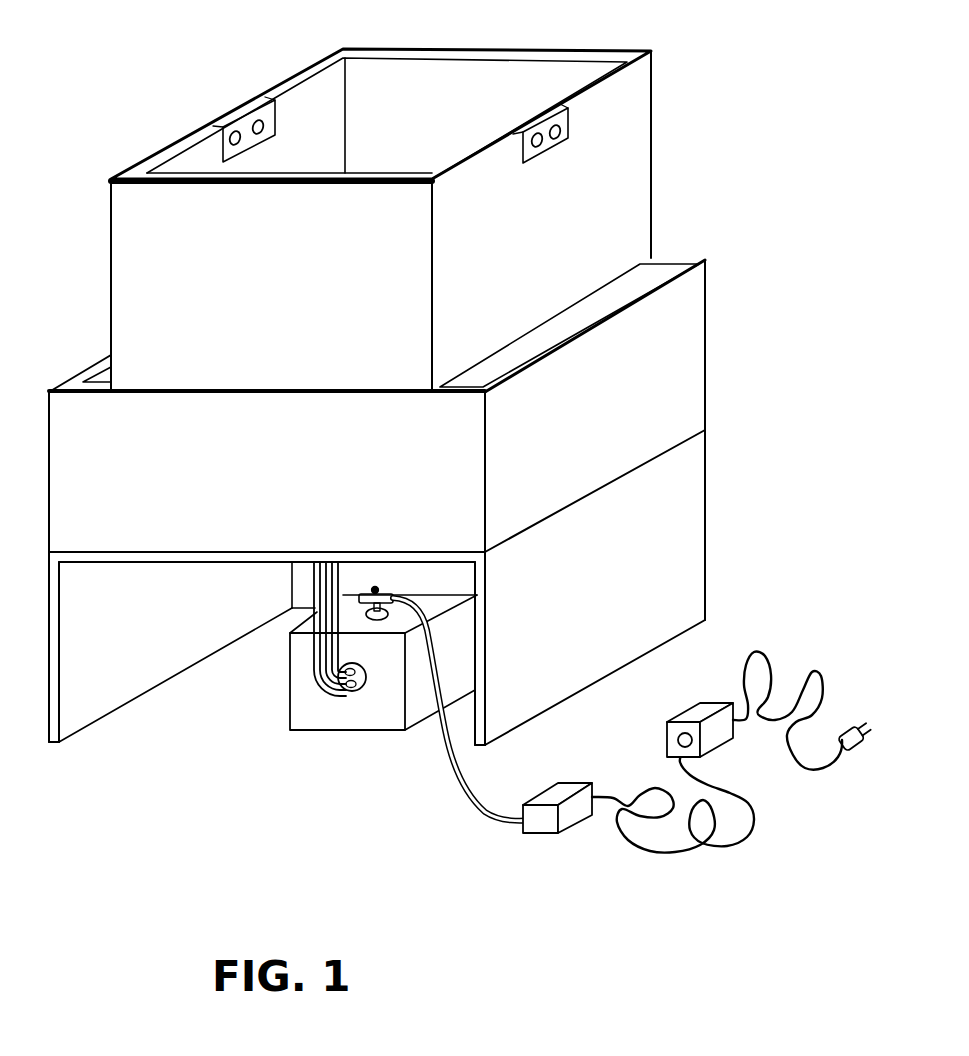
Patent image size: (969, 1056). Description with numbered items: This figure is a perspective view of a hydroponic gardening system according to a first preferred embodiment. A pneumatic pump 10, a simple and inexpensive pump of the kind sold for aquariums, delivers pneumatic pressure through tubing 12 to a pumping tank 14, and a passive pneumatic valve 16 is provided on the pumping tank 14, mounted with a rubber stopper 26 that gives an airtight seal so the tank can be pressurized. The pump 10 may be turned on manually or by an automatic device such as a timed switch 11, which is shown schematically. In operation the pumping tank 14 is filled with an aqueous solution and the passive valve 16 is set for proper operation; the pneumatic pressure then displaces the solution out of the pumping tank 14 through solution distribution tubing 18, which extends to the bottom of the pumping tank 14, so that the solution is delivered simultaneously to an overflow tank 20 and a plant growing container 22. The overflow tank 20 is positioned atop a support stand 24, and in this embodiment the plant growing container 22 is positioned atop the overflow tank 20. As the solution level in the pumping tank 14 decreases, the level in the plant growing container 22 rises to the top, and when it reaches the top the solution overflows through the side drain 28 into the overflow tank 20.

The pneumatic pump 10 is at (572, 820).
The timed switch 11 is at (690, 712).
The tubing 12 is at (458, 790).
The pumping tank 14 is at (342, 720).
The passive pneumatic valve 16 is at (378, 590).
The solution distribution tubing 18 is at (303, 668).
The overflow tank 20 is at (685, 380).
The plant growing container 22 is at (127, 270).
The support stand 24 is at (147, 670).
The rubber stopper 26 is at (362, 689).
The side drain 28 is at (245, 127).